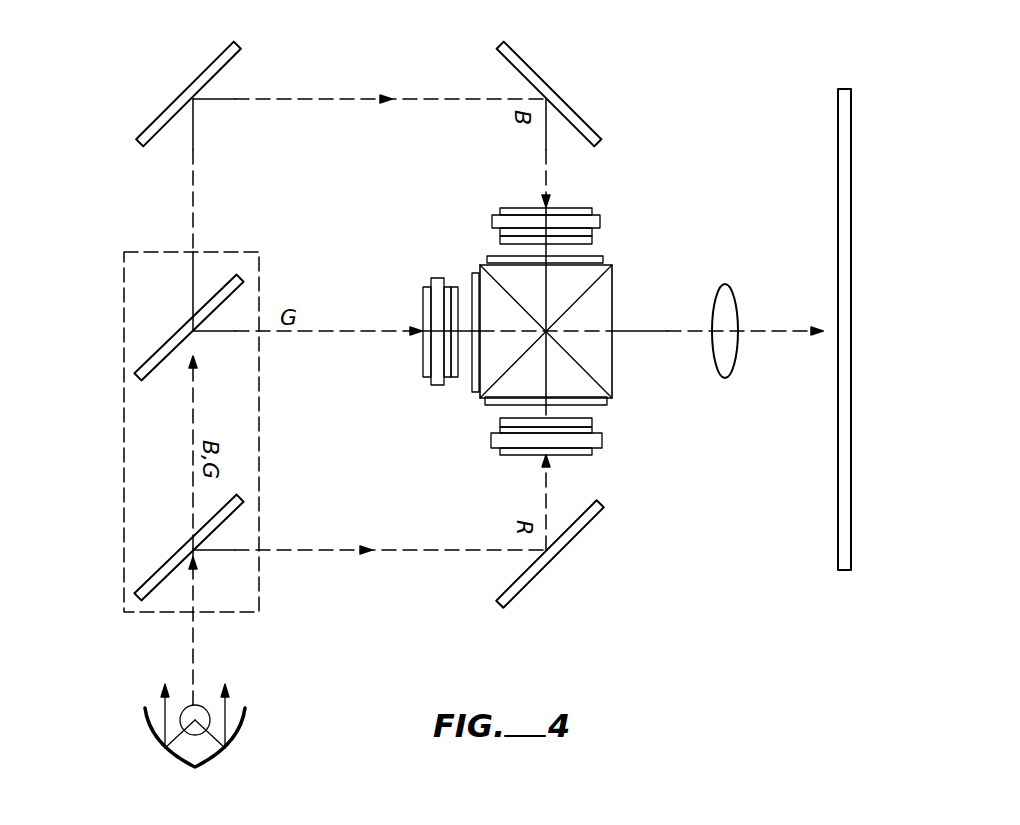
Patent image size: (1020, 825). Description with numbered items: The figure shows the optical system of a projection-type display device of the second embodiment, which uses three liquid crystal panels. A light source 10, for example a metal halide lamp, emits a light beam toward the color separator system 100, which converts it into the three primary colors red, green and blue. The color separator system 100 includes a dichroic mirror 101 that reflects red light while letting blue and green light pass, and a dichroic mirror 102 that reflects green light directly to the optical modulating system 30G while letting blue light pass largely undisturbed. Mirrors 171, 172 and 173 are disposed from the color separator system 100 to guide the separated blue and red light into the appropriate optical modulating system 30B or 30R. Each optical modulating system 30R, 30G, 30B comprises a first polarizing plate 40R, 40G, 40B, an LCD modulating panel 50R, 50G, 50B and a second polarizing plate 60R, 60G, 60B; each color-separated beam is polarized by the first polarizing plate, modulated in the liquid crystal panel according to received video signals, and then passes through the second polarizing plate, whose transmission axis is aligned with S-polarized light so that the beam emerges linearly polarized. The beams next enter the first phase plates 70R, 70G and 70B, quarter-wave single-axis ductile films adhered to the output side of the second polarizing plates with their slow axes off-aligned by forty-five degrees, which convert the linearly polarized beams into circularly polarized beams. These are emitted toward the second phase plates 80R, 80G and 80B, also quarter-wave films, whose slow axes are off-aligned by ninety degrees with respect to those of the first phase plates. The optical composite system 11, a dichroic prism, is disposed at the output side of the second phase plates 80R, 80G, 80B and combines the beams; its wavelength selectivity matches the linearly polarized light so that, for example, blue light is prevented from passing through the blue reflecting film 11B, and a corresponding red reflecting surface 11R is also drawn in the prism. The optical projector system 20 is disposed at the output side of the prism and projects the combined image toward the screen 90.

The light source 10 is at (243, 733).
The optical composite system 11 is at (579, 334).
The blue reflecting film 11B is at (575, 356).
The red reflecting dichroic surface 11R is at (508, 370).
The optical projector system 20 is at (735, 298).
The screen 90 is at (838, 131).
The color separator system 100 is at (124, 480).
The dichroic mirror 101 is at (160, 565).
The dichroic mirror 102 is at (170, 337).
The mirror 171 is at (215, 60).
The mirror 172 is at (533, 63).
The mirror 173 is at (538, 578).
The optical modulating system 30B is at (543, 229).
The first polarizing plate 40B is at (593, 211).
The LCD modulating panel 50B is at (497, 220).
The second polarizing plate 60B is at (593, 232).
The first phase plate 70B is at (600, 242).
The second phase plate 80B is at (487, 258).
The optical modulating system 30G is at (401, 352).
The first polarizing plate 40G is at (423, 312).
The LCD modulating panel 50G is at (438, 280).
The second polarizing plate 60G is at (448, 357).
The first phase plate 70G is at (454, 378).
The second phase plate 80G is at (477, 395).
The optical modulating system 30R is at (569, 463).
The first polarizing plate 40R is at (566, 452).
The LCD modulating panel 50R is at (598, 445).
The second polarizing plate 60R is at (515, 432).
The first phase plate 70R is at (500, 426).
The second phase plate 80R is at (605, 402).